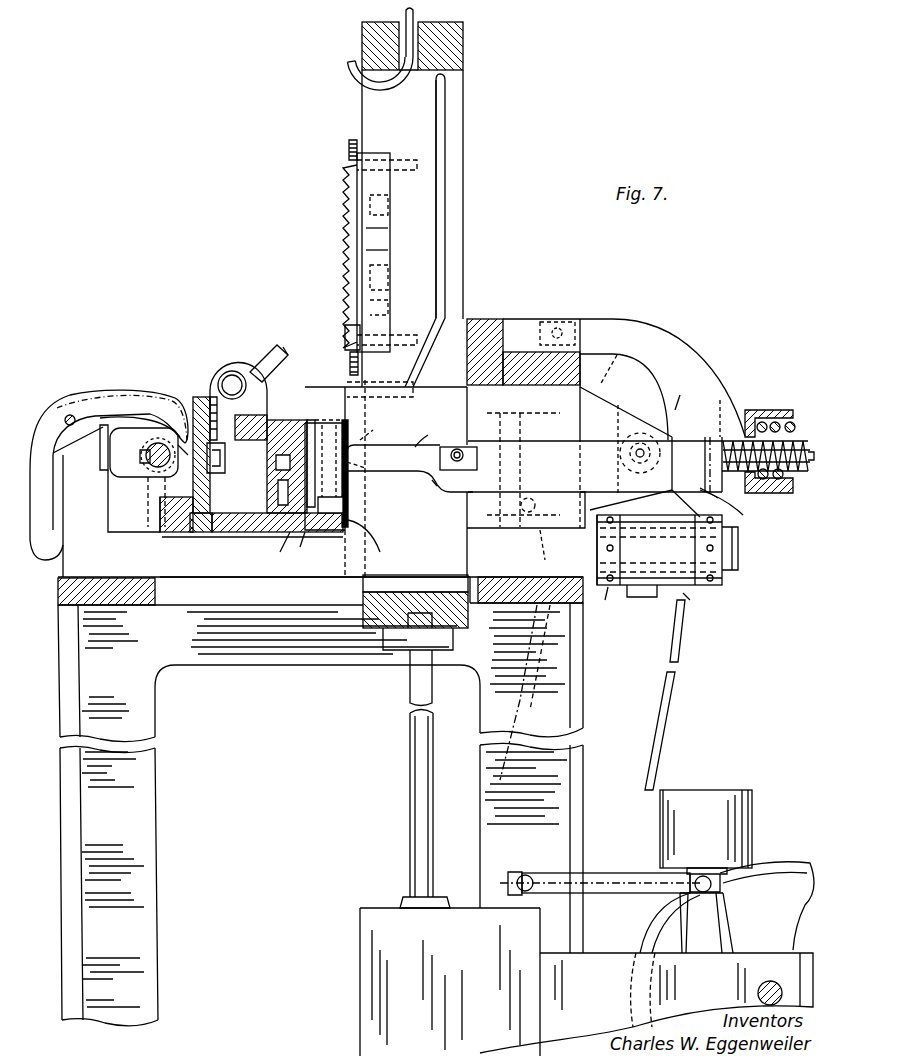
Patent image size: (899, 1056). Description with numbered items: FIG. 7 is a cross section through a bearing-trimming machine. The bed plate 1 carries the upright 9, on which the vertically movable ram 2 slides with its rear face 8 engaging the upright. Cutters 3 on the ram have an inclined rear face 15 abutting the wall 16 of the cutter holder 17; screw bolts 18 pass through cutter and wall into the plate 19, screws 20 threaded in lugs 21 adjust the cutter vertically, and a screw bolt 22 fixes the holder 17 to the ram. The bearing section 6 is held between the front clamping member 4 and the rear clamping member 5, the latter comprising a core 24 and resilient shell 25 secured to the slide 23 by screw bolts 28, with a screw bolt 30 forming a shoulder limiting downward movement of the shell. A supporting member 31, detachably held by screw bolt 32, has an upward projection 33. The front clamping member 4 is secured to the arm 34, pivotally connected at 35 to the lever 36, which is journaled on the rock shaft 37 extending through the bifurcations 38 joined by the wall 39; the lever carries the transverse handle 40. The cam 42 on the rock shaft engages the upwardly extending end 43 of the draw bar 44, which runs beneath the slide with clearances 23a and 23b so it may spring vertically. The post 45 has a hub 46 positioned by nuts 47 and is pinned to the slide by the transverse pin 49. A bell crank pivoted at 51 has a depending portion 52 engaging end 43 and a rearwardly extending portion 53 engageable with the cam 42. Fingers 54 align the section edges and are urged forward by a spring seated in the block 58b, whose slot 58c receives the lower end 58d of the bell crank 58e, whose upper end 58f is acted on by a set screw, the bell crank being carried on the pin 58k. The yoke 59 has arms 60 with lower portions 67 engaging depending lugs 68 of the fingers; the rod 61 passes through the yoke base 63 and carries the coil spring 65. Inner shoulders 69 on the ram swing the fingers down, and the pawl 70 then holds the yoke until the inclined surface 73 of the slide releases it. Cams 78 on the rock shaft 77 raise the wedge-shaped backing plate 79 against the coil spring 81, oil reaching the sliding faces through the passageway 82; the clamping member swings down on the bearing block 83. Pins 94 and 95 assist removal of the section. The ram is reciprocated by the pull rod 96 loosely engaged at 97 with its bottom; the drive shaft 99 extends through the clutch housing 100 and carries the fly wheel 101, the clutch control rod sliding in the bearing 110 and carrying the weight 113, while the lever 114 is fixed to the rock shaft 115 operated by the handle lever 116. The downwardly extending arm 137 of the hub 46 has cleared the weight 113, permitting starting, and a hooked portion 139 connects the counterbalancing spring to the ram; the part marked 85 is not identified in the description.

The bed plate 1 is at (130, 608).
The ram 2 is at (455, 200).
The cutters 3 is at (347, 260).
The front clamping member 4 is at (310, 418).
The rear clamping member 5 is at (330, 418).
The section of the bearing 6 is at (318, 417).
The rear face of ram 8 is at (318, 430).
The upright 9 is at (488, 319).
The rear face of cutter 15 is at (368, 253).
The wall of cutter holder 16 is at (368, 232).
The cutter holder 17 is at (372, 180).
The screw bolts 18 is at (348, 214).
The plate 19 is at (388, 270).
The screws 20 is at (349, 147).
The lugs 21 is at (345, 336).
The screw bolt 22 is at (404, 158).
The slide 23 is at (540, 436).
The clearance 23a is at (507, 530).
The clearance 23b is at (240, 560).
The core 24 is at (367, 480).
The shell 25 is at (325, 532).
The screw bolts 28 is at (385, 426).
The screw bolt 30 is at (350, 505).
The supporting member 31 is at (299, 549).
The screw bolt 32 is at (276, 553).
The projection 33 is at (270, 500).
The arm 34 is at (247, 388).
The pivotal connection 35 is at (232, 372).
The lever 36 is at (255, 365).
The rock shaft 37 is at (150, 470).
The bifurcations 38 is at (180, 378).
The wall 39 is at (170, 398).
The transverse handle 40 is at (282, 345).
The cam 42 is at (110, 482).
The upwardly extending end of draw bar 43 is at (48, 400).
The draw bar 44 is at (195, 566).
The post 45 is at (668, 518).
The hub 46 is at (652, 600).
The nuts 47 is at (720, 605).
The transverse pin 49 is at (696, 380).
The pivot 51 is at (72, 413).
The depending portion 52 is at (42, 562).
The rearwardly extending portion 53 is at (110, 388).
The fingers 54 is at (428, 432).
The block 58b is at (528, 330).
The slot 58c is at (492, 440).
The lower end of bell crank 58d is at (560, 488).
The bell crank 58e is at (600, 432).
The upper end of bell crank 58f is at (622, 358).
The pin 58k is at (594, 315).
The yoke 59 is at (733, 508).
The arms 60 is at (537, 507).
The rod 61 is at (806, 440).
The base of yoke 63 is at (727, 412).
The coil spring 65 is at (721, 498).
The forwardly projecting lower portions 67 is at (462, 487).
The depending lugs 68 is at (437, 492).
The inner shoulders 69 is at (447, 165).
The pawl 70 is at (660, 345).
The upper inclined surface 73 is at (640, 395).
The rock shaft 77 is at (180, 534).
The cams 78 is at (240, 534).
The backing plate 79 is at (222, 534).
The coil spring 81 is at (186, 463).
The oil passageway 82 is at (200, 397).
The bearing block 83 is at (376, 543).
The spring housing 85 is at (760, 410).
The pin 94 is at (268, 465).
The pin 95 is at (267, 489).
The pull rod 96 is at (420, 765).
The loose engagement 97 is at (400, 648).
The drive shaft 99 is at (773, 981).
The clutch housing 100 is at (646, 1003).
The fly wheel 101 is at (765, 833).
The bearing 110 is at (720, 915).
The weight 113 is at (708, 802).
The lever 114 is at (611, 895).
The rock shaft 115 is at (530, 878).
The handle lever 116 is at (520, 516).
The arm 137 is at (667, 718).
The hooked portion 139 is at (355, 78).